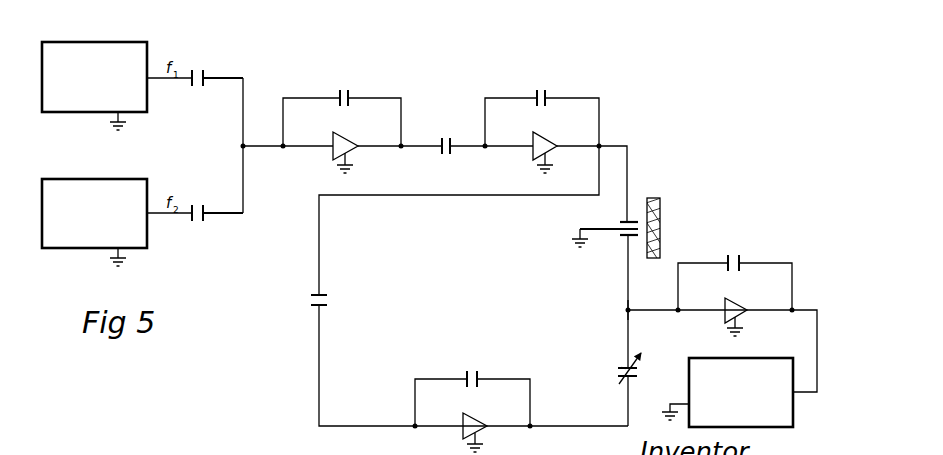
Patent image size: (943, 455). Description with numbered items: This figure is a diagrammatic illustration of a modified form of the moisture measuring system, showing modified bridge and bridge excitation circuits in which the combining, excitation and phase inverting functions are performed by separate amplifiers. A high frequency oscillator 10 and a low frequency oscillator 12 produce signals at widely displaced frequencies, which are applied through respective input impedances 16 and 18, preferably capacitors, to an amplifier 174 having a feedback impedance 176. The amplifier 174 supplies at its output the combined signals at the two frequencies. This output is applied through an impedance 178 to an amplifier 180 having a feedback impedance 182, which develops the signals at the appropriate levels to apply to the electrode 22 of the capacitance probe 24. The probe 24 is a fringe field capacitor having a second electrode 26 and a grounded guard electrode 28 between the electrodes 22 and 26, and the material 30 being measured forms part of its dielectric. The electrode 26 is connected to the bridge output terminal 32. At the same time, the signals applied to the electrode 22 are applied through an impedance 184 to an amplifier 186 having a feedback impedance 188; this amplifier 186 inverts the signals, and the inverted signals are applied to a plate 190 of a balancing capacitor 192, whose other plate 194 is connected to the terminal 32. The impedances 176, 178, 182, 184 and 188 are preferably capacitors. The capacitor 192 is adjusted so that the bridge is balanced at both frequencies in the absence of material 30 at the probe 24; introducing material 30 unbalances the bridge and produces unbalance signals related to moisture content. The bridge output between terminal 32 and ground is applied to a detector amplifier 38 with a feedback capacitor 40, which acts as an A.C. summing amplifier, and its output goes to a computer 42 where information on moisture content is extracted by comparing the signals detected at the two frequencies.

The high frequency oscillator 10 is at (108, 42).
The low frequency oscillator 12 is at (113, 179).
The input impedance 16 is at (198, 77).
The input impedance 18 is at (198, 212).
The electrode 22 is at (624, 222).
The capacitance probe 24 is at (636, 206).
The electrode 26 is at (628, 238).
The grounded guard electrode 28 is at (612, 229).
The material 30 is at (661, 203).
The bridge output terminal 32 is at (626, 310).
The detector amplifier 38 is at (741, 305).
The capacitor 40 is at (743, 260).
The computer 42 is at (780, 358).
The amplifier 174 is at (349, 141).
The feedback impedance 176 is at (349, 98).
The impedance 178 is at (451, 140).
The amplifier 180 is at (546, 141).
The feedback impedance 182 is at (546, 98).
The impedance 184 is at (326, 303).
The amplifier 186 is at (477, 421).
The feedback impedance 188 is at (478, 384).
The plate 190 is at (617, 379).
The balancing capacitor 192 is at (641, 375).
The plate 194 is at (622, 366).